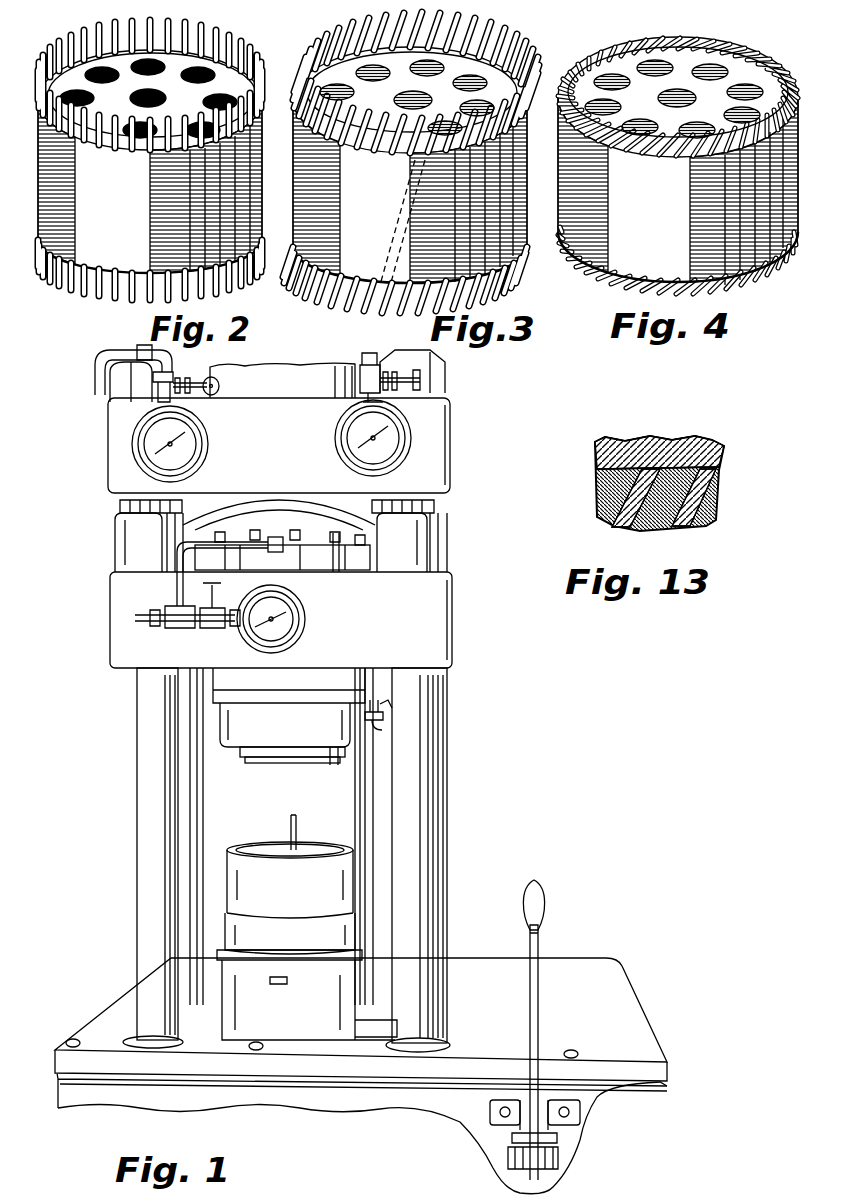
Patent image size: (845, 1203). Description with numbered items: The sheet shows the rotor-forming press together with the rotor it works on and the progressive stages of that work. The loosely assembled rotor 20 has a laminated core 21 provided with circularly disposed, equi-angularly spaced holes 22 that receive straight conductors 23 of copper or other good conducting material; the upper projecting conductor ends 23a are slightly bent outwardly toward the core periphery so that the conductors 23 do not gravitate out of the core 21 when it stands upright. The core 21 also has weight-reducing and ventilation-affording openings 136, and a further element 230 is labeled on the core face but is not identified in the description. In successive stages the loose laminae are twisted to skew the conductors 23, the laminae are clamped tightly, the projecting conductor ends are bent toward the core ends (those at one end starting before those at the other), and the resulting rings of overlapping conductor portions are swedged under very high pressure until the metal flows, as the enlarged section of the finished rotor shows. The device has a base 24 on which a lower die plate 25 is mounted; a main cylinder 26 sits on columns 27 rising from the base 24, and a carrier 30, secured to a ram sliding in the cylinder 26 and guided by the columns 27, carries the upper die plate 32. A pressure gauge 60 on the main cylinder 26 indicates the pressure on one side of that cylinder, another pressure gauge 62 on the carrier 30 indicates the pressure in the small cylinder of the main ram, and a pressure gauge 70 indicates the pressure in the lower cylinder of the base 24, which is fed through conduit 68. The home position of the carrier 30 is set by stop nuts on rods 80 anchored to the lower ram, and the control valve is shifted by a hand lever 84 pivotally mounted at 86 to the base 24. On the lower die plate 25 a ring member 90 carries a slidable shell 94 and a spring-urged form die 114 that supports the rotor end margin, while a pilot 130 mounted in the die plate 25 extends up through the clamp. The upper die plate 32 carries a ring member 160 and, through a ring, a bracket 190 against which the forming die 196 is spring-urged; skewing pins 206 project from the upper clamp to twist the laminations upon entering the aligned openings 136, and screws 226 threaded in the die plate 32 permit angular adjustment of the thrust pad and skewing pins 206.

In FIG. 2, the rotor 20 is at (240, 60).
In FIG. 3, the rotor 20 is at (288, 43).
In FIG. 4, the rotor 20 is at (697, 64).
In FIG. 2, the laminated core 21 is at (50, 160).
In FIG. 3, the laminated core 21 is at (410, 193).
In FIG. 4, the laminated core 21 is at (566, 190).
In FIG. 2, the holes 22 is at (145, 173).
In FIG. 3, the holes 22 is at (386, 167).
In FIG. 4, the holes 22 is at (666, 163).
In FIG. 3, the conductors 23 is at (312, 44).
In FIG. 4, the conductors 23 is at (748, 58).
In FIG. 2, the upper projecting conductor ends 23a is at (105, 42).
In FIG. 2, the openings 136 is at (205, 70).
In FIG. 3, the openings 136 is at (486, 95).
In FIG. 4, the openings 136 is at (640, 62).
In FIG. 2, the center hole 230 is at (138, 99).
In FIG. 3, the center hole 230 is at (396, 99).
In FIG. 4, the center hole 230 is at (666, 99).
In FIG. 1, the base 24 is at (616, 988).
In FIG. 1, the lower die plate 25 is at (332, 968).
In FIG. 1, the main cylinder 26 is at (292, 362).
In FIG. 1, the columns 27 is at (145, 805).
In FIG. 1, the carrier 30 is at (452, 614).
In FIG. 1, the upper die plate 32 is at (296, 672).
In FIG. 1, the pressure gauge 60 is at (411, 438).
In FIG. 1, the pressure gauge 62 is at (305, 612).
In FIG. 1, the conduit 68 is at (95, 382).
In FIG. 1, the pressure gauge 70 is at (208, 446).
In FIG. 1, the rods 80 is at (205, 796).
In FIG. 1, the hand lever 84 is at (540, 950).
In FIG. 1, the pivot 86 is at (505, 1160).
In FIG. 1, the ring member 90 is at (355, 930).
In FIG. 1, the shell 94 is at (232, 856).
In FIG. 1, the form die 114 is at (324, 847).
In FIG. 1, the pilot 130 is at (298, 820).
In FIG. 1, the ring member 160 is at (225, 747).
In FIG. 1, the bracket 190 is at (262, 758).
In FIG. 1, the forming die 196 is at (335, 757).
In FIG. 1, the skewing pins 206 is at (300, 764).
In FIG. 1, the screws 226 is at (384, 714).